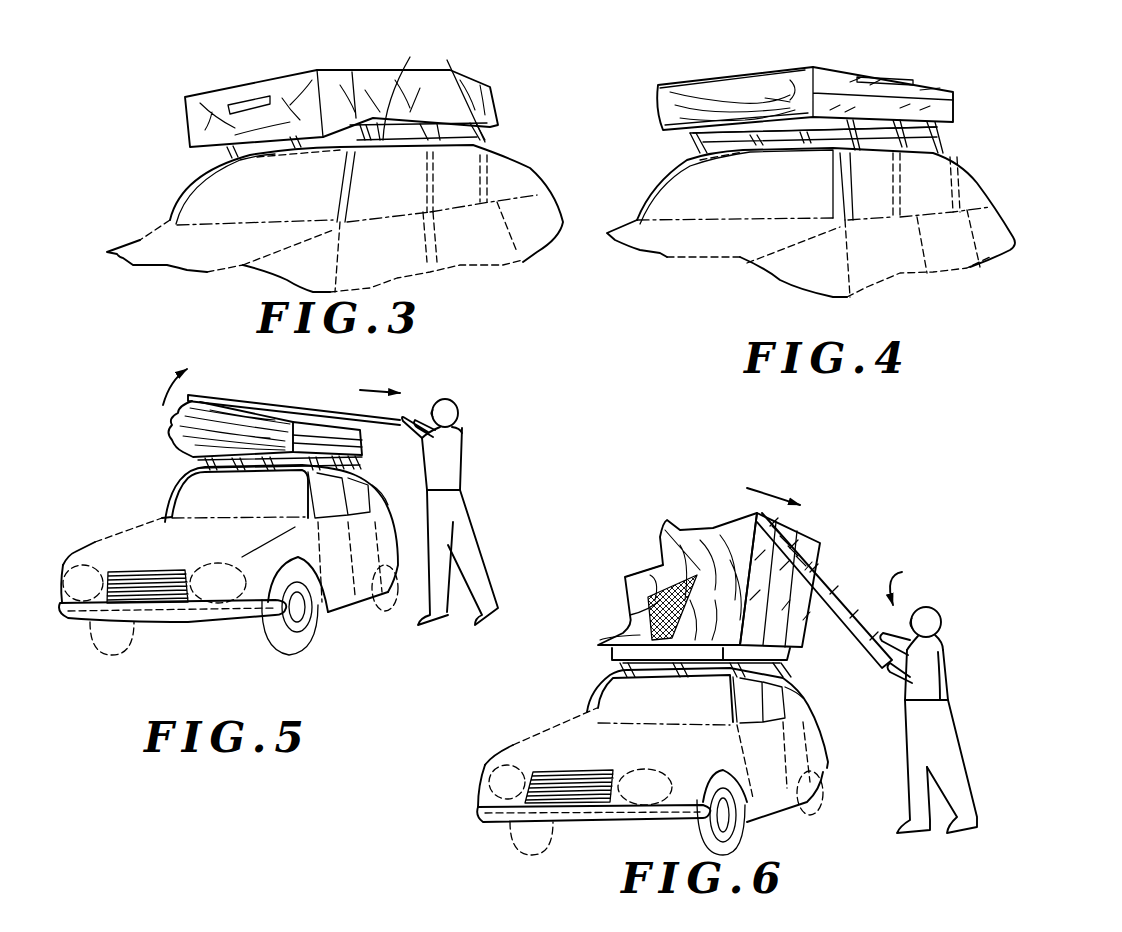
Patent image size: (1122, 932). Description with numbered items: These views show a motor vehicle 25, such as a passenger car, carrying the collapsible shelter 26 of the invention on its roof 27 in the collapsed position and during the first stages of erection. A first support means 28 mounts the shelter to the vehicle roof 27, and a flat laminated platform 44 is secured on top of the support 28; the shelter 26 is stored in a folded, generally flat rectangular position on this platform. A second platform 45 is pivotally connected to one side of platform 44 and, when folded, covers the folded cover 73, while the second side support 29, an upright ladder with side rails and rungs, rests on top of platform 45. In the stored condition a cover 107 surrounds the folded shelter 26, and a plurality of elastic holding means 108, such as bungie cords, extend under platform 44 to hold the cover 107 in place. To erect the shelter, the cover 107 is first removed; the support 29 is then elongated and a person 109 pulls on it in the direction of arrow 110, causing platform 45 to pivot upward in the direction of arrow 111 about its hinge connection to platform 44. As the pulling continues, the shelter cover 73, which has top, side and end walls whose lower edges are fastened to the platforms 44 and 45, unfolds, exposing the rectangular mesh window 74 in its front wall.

In FIG. 3, the motor vehicle 25 is at (494, 270).
In FIG. 4, the motor vehicle 25 is at (975, 279).
In FIG. 5, the motor vehicle 25 is at (184, 633).
In FIG. 6, the motor vehicle 25 is at (759, 820).
In FIG. 3, the collapsible shelter 26 is at (273, 100).
In FIG. 4, the collapsible shelter 26 is at (655, 107).
In FIG. 5, the collapsible shelter 26 is at (160, 435).
In FIG. 6, the collapsible shelter 26 is at (687, 514).
In FIG. 3, the roof 27 is at (310, 153).
In FIG. 4, the roof 27 is at (730, 152).
In FIG. 5, the roof 27 is at (220, 469).
In FIG. 6, the roof 27 is at (662, 675).
In FIG. 3, the first support means 28 is at (433, 170).
In FIG. 4, the first support means 28 is at (943, 143).
In FIG. 5, the first support means 28 is at (361, 462).
In FIG. 6, the first support means 28 is at (617, 670).
In FIG. 4, the second side support 29 is at (888, 70).
In FIG. 5, the second side support 29 is at (314, 397).
In FIG. 6, the second side support 29 is at (845, 568).
In FIG. 4, the platform 44 is at (677, 140).
In FIG. 5, the platform 44 is at (281, 456).
In FIG. 6, the platform 44 is at (707, 660).
In FIG. 4, the second platform 45 is at (730, 72).
In FIG. 5, the second platform 45 is at (200, 392).
In FIG. 6, the second platform 45 is at (802, 613).
In FIG. 6, the cover 73 is at (647, 567).
In FIG. 6, the window 74 is at (647, 610).
In FIG. 3, the cover 107 is at (353, 72).
In FIG. 3, the elastic holding means 108 is at (434, 88).
In FIG. 5, the person 109 is at (452, 467).
In FIG. 6, the person 109 is at (943, 680).
In FIG. 5, the arrow 110 is at (373, 388).
In FIG. 6, the arrow 110 is at (914, 583).
In FIG. 5, the arrow 111 is at (165, 400).
In FIG. 6, the arrow 111 is at (763, 488).